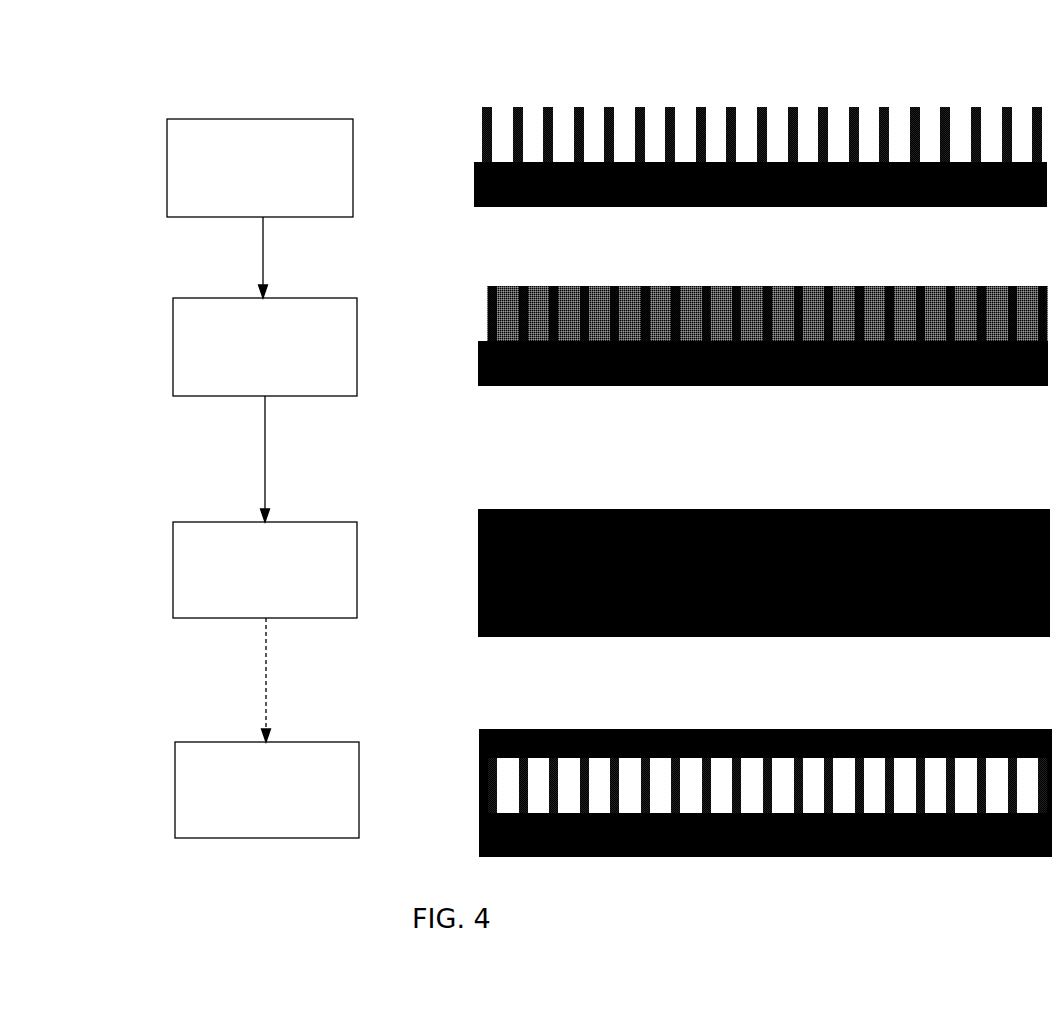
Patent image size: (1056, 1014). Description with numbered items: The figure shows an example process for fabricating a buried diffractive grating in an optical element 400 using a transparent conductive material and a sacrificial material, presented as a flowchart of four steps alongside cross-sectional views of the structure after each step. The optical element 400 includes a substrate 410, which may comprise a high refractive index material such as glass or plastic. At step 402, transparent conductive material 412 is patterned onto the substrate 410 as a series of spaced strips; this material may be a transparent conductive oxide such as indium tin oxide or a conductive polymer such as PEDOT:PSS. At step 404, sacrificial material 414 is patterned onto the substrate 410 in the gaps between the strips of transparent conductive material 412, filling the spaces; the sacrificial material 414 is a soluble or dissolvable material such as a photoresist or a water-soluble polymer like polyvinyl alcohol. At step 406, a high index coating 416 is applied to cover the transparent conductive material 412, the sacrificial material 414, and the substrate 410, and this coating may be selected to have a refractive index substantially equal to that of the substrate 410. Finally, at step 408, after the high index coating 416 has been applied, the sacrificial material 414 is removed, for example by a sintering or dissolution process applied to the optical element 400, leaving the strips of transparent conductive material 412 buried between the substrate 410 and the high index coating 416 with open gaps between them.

The optical element 400 is at (588, 75).
The step of patterning transparent conductive material onto substrate 402 is at (260, 168).
The step of filling gaps with sacrificial material 404 is at (265, 347).
The step of covering with coating 406 is at (265, 570).
The step of removing sacrificial material 408 is at (267, 790).
The substrate 410 is at (474, 170).
The transparent conductive material 412 is at (482, 113).
The sacrificial material 414 is at (487, 292).
The high index coating 416 is at (478, 520).